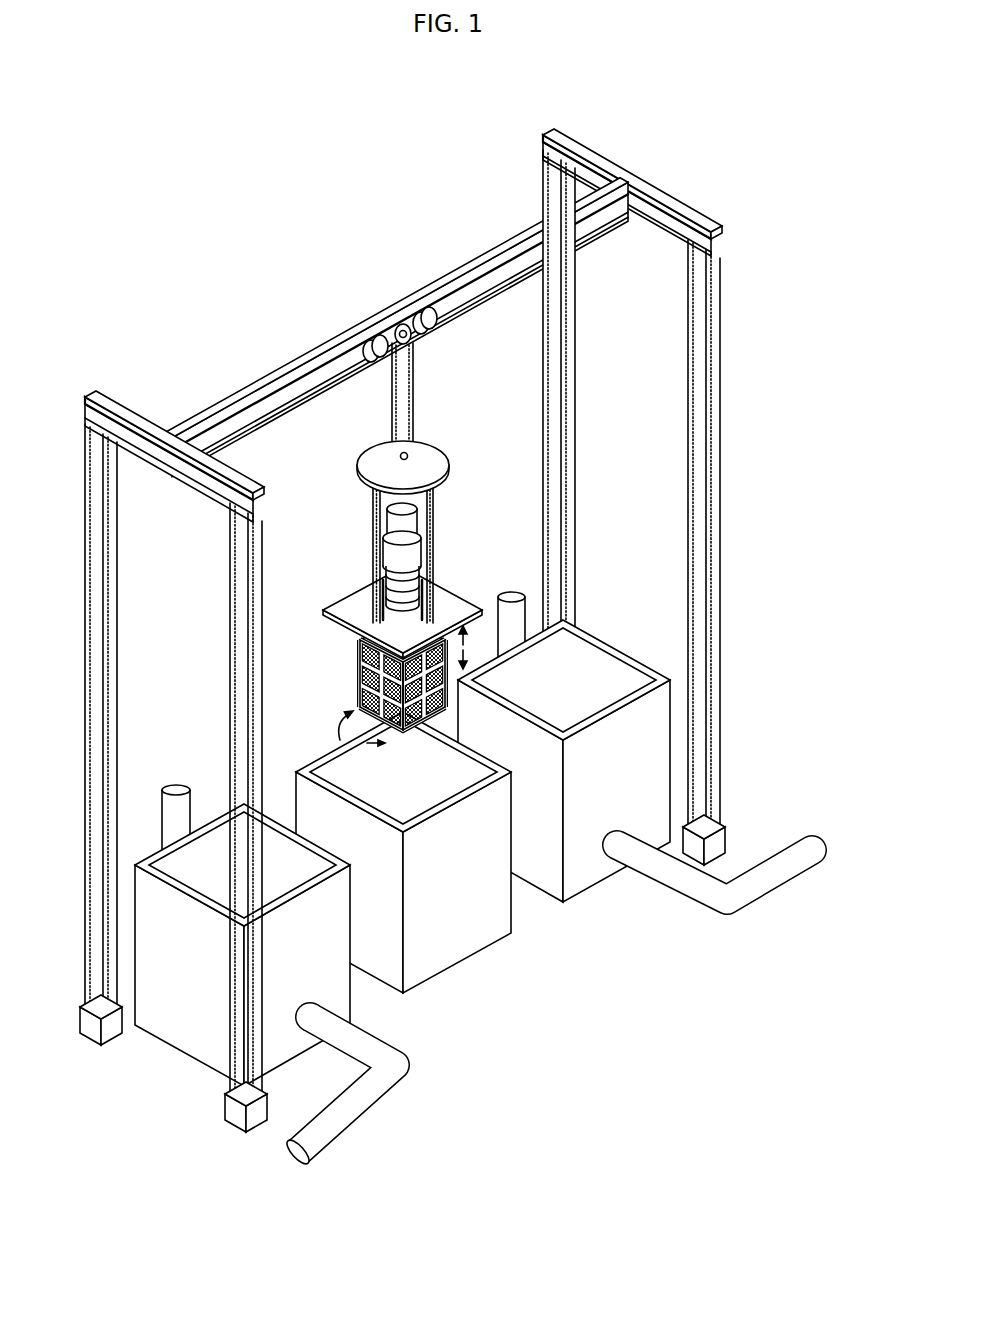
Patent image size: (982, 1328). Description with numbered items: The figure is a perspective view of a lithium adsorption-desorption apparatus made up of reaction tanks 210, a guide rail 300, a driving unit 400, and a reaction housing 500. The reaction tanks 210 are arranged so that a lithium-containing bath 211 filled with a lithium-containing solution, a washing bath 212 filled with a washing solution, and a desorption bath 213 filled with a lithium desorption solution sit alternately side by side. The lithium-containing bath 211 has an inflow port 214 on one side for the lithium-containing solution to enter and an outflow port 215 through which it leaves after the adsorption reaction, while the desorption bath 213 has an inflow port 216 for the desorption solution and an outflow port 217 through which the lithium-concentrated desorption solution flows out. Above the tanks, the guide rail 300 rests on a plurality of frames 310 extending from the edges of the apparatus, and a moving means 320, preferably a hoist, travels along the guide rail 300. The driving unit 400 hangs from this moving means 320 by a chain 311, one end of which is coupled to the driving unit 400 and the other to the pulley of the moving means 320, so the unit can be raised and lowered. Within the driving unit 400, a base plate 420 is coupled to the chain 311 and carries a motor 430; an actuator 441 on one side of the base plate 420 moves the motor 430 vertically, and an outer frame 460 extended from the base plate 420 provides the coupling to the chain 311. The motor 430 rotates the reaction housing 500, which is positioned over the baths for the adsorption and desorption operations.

The reaction tanks 210 is at (402, 853).
The lithium-containing bath 211 is at (317, 945).
The washing bath 212 is at (462, 940).
The desorption bath 213 is at (583, 872).
The inflow port 214 is at (166, 806).
The outflow port 215 is at (360, 1120).
The inflow port 216 is at (516, 614).
The outflow port 217 is at (771, 878).
The guide rail 300 is at (492, 270).
The frames 310 is at (710, 472).
The chain 311 is at (415, 385).
The moving means 320 is at (423, 312).
The driving unit 400 is at (415, 536).
The base plate 420 is at (352, 603).
The motor 430 is at (408, 527).
The actuator 441 is at (422, 583).
The outer frame 460 is at (432, 455).
The reaction housing 500 is at (360, 663).